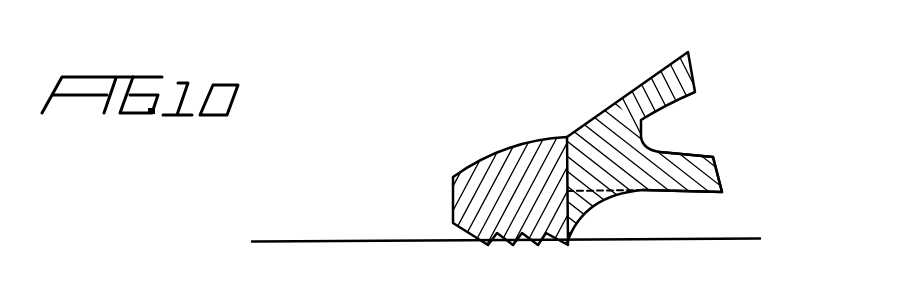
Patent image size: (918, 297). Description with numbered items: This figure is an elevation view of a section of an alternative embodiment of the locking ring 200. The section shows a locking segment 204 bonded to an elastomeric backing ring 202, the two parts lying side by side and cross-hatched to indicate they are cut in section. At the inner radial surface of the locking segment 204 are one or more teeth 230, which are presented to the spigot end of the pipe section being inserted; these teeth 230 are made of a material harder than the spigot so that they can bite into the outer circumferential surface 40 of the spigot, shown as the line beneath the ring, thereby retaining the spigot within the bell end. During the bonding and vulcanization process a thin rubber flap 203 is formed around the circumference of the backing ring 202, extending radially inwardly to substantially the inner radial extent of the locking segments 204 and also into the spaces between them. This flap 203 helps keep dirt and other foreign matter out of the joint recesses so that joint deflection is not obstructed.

The outer circumferential surface 40 is at (297, 250).
The locking ring 200 is at (452, 152).
The elastomeric backing ring 202 is at (618, 105).
The rubber flap 203 is at (573, 227).
The locking segment 204 is at (505, 162).
The teeth 230 is at (702, 192).